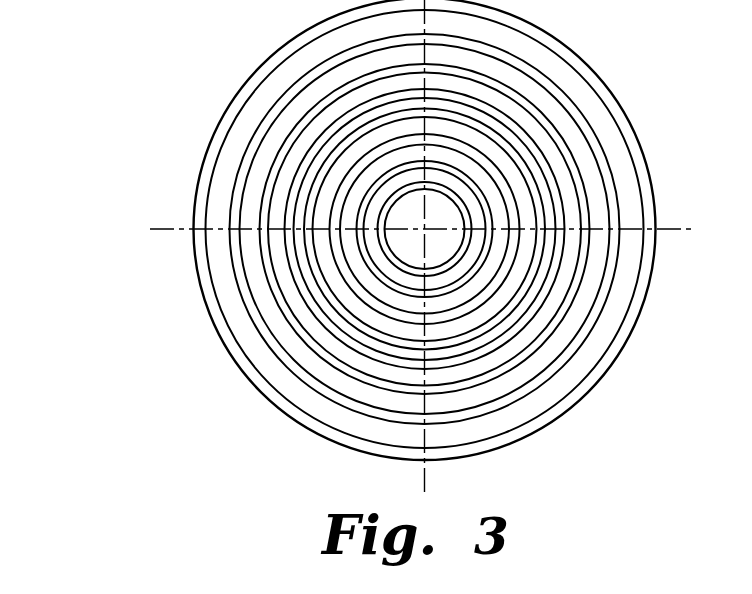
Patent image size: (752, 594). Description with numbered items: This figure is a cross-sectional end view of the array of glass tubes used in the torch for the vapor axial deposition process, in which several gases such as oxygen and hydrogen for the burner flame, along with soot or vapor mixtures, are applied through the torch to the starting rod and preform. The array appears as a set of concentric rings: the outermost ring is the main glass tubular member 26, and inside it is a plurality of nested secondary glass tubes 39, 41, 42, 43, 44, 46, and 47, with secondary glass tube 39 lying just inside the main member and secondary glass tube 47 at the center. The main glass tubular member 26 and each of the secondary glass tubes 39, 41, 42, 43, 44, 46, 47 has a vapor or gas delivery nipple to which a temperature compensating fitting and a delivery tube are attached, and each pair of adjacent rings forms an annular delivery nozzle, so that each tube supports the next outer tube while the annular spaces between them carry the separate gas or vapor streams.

The main glass tubular member 26 is at (238, 90).
The secondary glass tube 39 is at (250, 143).
The secondary glass tube 41 is at (265, 185).
The secondary glass tube 42 is at (285, 204).
The secondary glass tube 43 is at (303, 234).
The secondary glass tube 44 is at (335, 253).
The secondary glass tube 46 is at (352, 260).
The secondary glass tube 47 is at (380, 262).